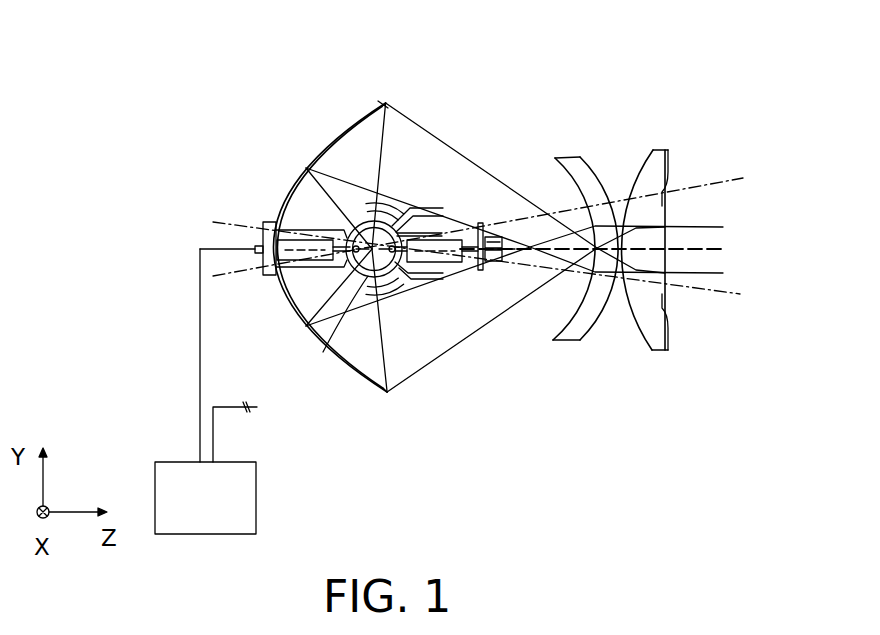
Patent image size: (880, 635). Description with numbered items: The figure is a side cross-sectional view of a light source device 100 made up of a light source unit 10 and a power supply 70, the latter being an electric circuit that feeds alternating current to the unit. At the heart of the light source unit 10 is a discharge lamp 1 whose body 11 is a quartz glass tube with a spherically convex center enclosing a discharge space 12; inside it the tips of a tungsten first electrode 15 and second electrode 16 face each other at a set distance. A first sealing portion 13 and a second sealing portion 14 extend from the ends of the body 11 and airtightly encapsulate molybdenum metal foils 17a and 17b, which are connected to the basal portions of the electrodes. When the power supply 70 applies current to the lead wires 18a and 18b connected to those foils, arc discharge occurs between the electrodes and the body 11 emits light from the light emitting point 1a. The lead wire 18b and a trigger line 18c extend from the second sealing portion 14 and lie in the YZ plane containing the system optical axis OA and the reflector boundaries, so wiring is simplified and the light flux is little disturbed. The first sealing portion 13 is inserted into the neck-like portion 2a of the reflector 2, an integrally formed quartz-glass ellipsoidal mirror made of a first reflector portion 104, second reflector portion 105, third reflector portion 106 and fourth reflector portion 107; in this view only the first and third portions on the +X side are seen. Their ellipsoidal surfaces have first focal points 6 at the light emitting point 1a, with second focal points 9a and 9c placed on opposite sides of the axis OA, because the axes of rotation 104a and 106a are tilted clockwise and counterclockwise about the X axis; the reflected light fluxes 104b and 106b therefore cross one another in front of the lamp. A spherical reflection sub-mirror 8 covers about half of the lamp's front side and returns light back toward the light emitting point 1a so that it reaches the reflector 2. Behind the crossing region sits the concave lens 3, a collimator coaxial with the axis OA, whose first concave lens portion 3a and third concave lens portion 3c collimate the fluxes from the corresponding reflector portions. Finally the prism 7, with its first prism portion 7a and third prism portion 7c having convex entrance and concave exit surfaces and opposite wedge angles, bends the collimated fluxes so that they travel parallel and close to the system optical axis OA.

The light source device 100 is at (730, 34).
The light source unit 10 is at (536, 81).
The discharge lamp 1 is at (363, 212).
The light emitting point 1a is at (386, 200).
The reflector 2 is at (342, 249).
The neck-like portion 2a is at (269, 222).
The concave lens 3 is at (583, 246).
The first concave lens portion 3a is at (595, 322).
The third concave lens portion 3c is at (590, 177).
The first focal point 6 is at (412, 200).
The prism 7 is at (680, 249).
The first prism portion 7a is at (668, 300).
The third prism portion 7c is at (672, 198).
The reflection sub-mirror 8 is at (398, 206).
The second focal point 9a is at (657, 352).
The second focal point 9c is at (653, 148).
The body 11 is at (359, 220).
The discharge space 12 is at (328, 352).
The first sealing portion 13 is at (298, 313).
The second sealing portion 14 is at (447, 264).
The first electrode 15 is at (328, 268).
The second electrode 16 is at (418, 288).
The metal foil 17a is at (311, 242).
The metal foil 17b is at (441, 240).
The lead wire 18a is at (254, 260).
The lead wire 18b is at (490, 266).
The trigger line 18c is at (496, 234).
The power supply 70 is at (255, 508).
The first reflector portion 104 is at (380, 100).
The second reflector portion 105 is at (405, 80).
The axis of rotation 104a is at (508, 262).
The light flux 104b is at (470, 160).
The third reflector portion 106 is at (385, 394).
The fourth reflector portion 107 is at (400, 418).
The axis of rotation 106a is at (507, 213).
The light flux 106b is at (455, 343).
The system optical axis OA is at (723, 250).